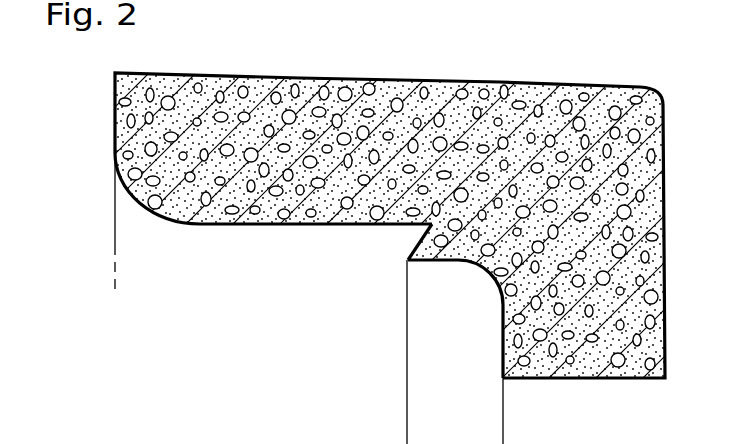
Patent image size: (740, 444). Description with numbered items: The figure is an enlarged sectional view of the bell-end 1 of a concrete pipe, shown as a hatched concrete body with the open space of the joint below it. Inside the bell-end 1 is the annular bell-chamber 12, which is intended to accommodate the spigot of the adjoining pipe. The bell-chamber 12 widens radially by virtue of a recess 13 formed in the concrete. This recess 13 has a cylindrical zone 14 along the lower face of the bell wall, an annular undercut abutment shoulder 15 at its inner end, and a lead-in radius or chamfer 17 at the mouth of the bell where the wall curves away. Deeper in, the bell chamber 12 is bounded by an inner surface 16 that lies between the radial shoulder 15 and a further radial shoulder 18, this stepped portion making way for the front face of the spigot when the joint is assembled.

The bell-end 1 is at (200, 80).
The annular bell-chamber 12 is at (221, 357).
The recess 13 is at (249, 225).
The cylindrical zone 14 is at (321, 226).
The annular undercut abutment shoulder 15 is at (413, 243).
The inner surface 16 is at (447, 262).
The lead-in radius or chamfer 17 is at (133, 208).
The radial shoulder 18 is at (502, 322).